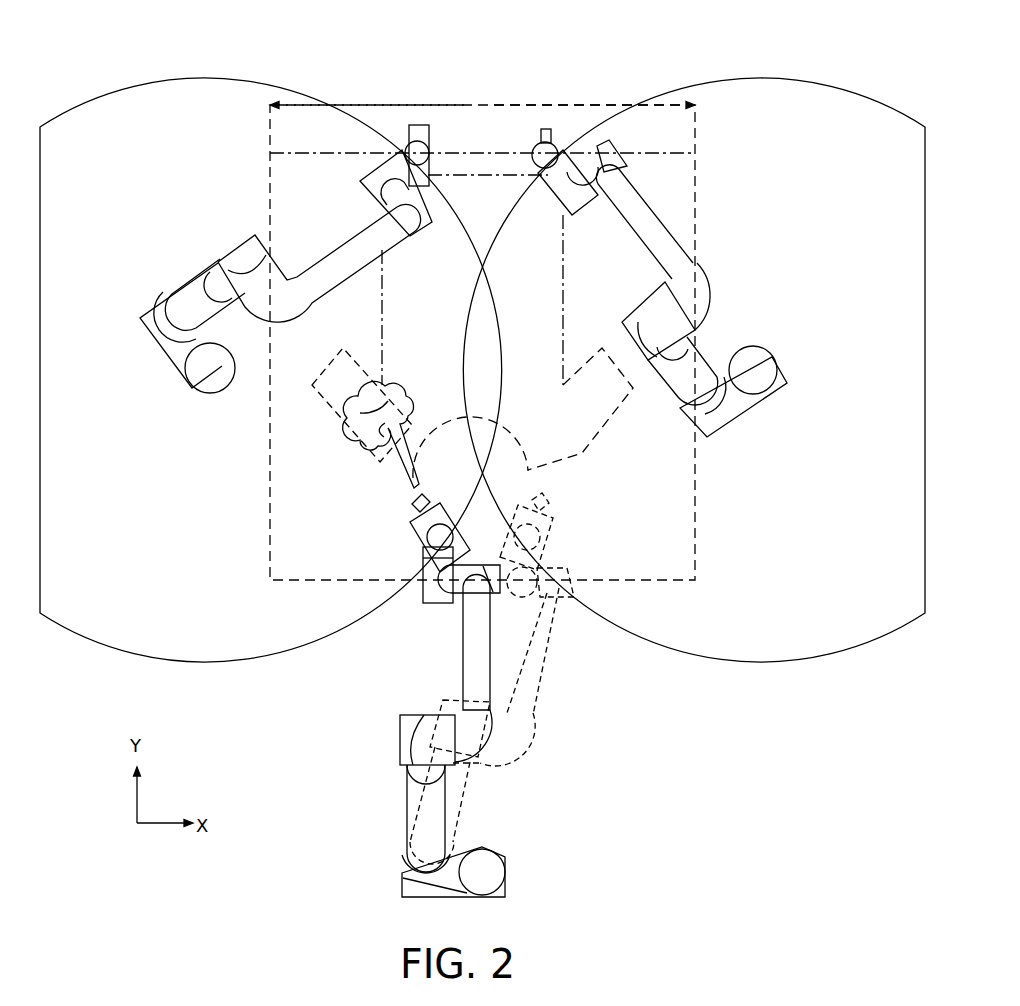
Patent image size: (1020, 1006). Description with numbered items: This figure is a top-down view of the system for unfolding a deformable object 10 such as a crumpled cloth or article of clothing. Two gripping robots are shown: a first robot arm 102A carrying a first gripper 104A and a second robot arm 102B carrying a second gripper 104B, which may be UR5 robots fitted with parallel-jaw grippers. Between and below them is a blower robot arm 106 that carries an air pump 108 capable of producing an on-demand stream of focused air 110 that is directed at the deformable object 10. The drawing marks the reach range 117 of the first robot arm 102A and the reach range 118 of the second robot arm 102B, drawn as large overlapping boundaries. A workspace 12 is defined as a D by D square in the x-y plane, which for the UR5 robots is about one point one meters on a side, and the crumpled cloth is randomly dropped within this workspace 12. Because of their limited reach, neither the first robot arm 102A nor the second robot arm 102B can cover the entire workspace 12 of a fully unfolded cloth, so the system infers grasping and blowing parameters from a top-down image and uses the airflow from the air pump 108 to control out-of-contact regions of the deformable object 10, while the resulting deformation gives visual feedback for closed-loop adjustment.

The deformable object 10 is at (482, 296).
The workspace 12 is at (510, 337).
The first robot arm 102A is at (257, 280).
The second robot arm 102B is at (712, 301).
The first gripper 104A is at (396, 124).
The second gripper 104B is at (587, 124).
The blower robot arm 106 is at (518, 695).
The air pump 108 is at (398, 558).
The stream of air 110 is at (359, 440).
The reach range 117 is at (261, 400).
The reach range 118 is at (694, 404).